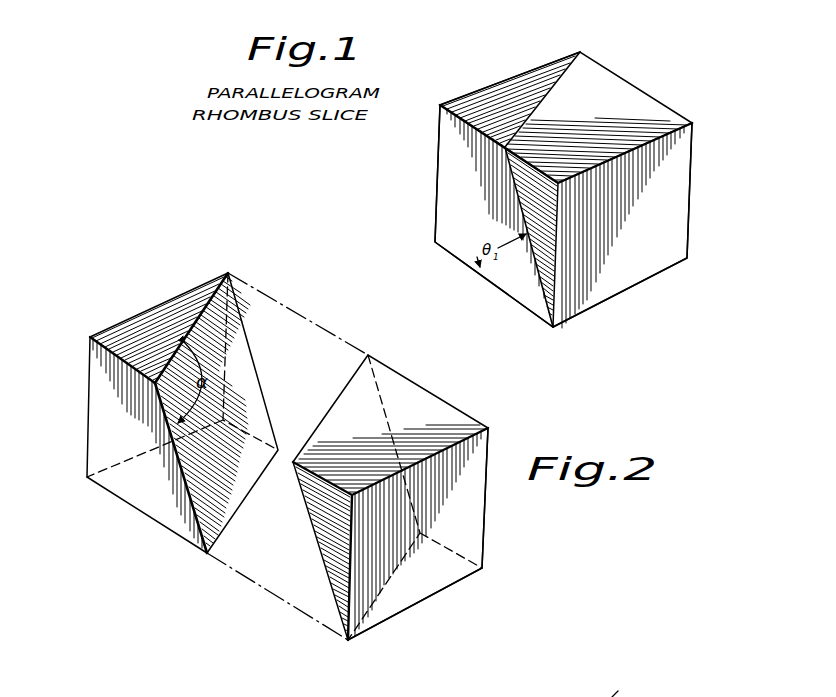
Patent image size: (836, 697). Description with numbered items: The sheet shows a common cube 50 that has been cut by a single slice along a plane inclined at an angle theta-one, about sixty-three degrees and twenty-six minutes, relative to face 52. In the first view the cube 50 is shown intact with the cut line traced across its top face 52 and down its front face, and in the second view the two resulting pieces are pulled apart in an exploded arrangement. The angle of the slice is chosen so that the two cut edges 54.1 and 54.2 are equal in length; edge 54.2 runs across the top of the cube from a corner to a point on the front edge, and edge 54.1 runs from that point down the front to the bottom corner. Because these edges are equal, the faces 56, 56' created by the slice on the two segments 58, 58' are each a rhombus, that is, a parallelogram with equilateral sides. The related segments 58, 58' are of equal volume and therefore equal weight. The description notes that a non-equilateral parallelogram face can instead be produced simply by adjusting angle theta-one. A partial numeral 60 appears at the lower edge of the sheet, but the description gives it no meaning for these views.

In FIG. 1, the common cube 50 is at (656, 69).
In FIG. 1, the face 52 is at (500, 92).
In FIG. 2, the face 52 is at (125, 327).
In FIG. 1, the edge 54.1 is at (520, 207).
In FIG. 2, the edge 54.1 is at (173, 500).
In FIG. 1, the edge 54.2 is at (557, 80).
In FIG. 2, the edge 54.2 is at (200, 308).
In FIG. 2, the face 56 is at (227, 456).
In FIG. 2, the face 56' is at (386, 497).
In FIG. 1, the segment 58 is at (469, 216).
In FIG. 2, the segment 58 is at (118, 445).
In FIG. 1, the segment 58' is at (622, 225).
In FIG. 2, the segment 58' is at (431, 503).
In FIG. 2, the next figure element 60 is at (623, 686).